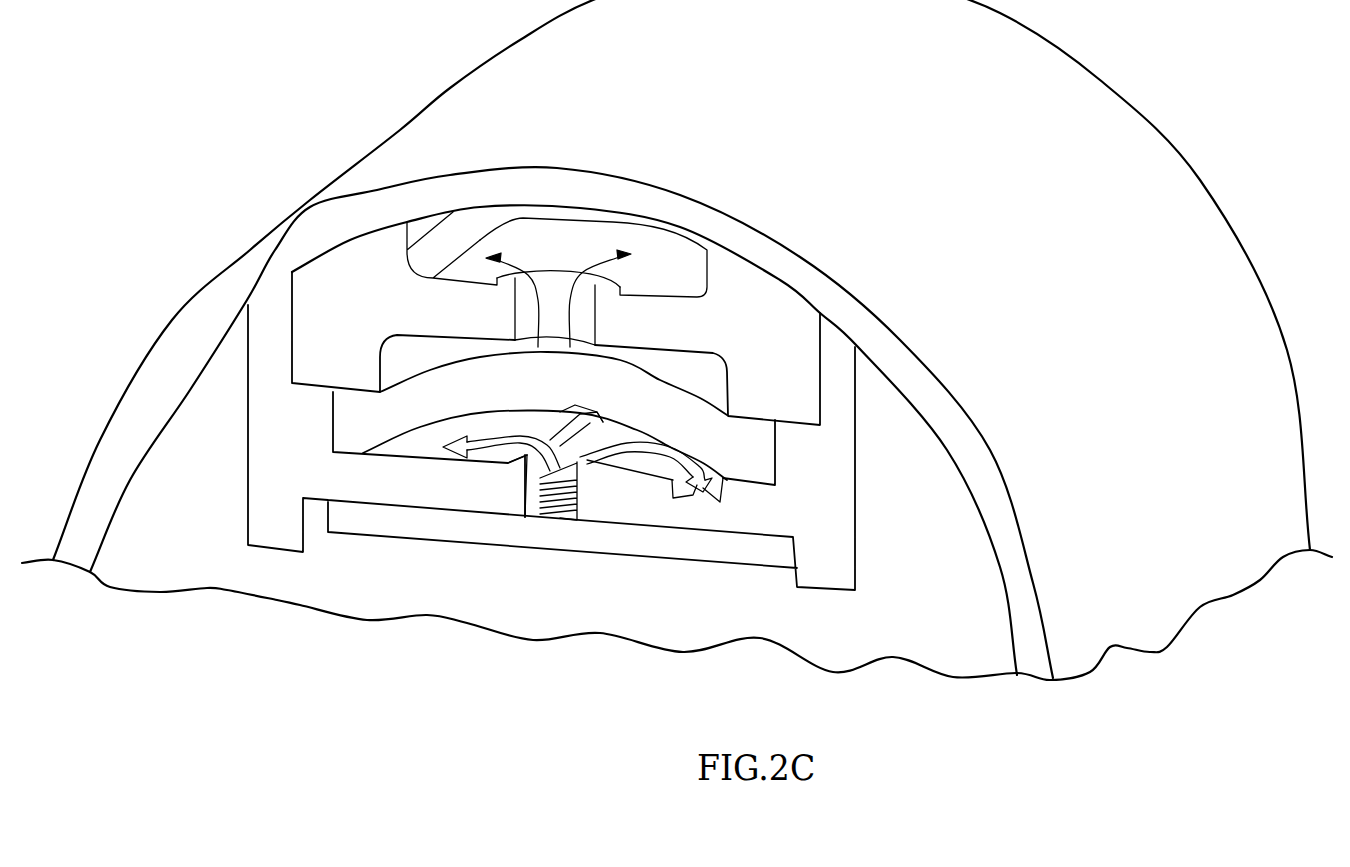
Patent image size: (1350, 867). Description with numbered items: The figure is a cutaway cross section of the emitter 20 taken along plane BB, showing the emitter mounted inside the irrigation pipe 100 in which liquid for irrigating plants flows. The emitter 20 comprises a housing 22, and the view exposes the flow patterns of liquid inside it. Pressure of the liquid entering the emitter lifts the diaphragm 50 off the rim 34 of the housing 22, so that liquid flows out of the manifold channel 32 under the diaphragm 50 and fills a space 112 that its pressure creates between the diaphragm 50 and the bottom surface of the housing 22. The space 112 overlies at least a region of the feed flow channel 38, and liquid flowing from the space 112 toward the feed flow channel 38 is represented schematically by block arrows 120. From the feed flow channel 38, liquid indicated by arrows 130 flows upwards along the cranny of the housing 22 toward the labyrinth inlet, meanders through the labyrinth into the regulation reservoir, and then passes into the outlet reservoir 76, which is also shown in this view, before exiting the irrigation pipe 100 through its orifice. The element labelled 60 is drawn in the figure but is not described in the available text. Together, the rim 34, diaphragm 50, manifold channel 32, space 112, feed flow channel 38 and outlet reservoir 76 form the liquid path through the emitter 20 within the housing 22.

The emitter 20 is at (912, 465).
The housing 22 is at (828, 514).
The manifold channel 32 is at (533, 482).
The rim 34 is at (493, 452).
The feed flow channel 38 is at (703, 495).
The diaphragm 50 is at (558, 396).
The upper body 60 is at (763, 336).
The outlet reservoir 76 is at (675, 273).
The irrigation pipe 100 is at (1086, 258).
The space 112 is at (520, 420).
The block arrows 120 is at (385, 342).
The arrows 130 is at (597, 262).